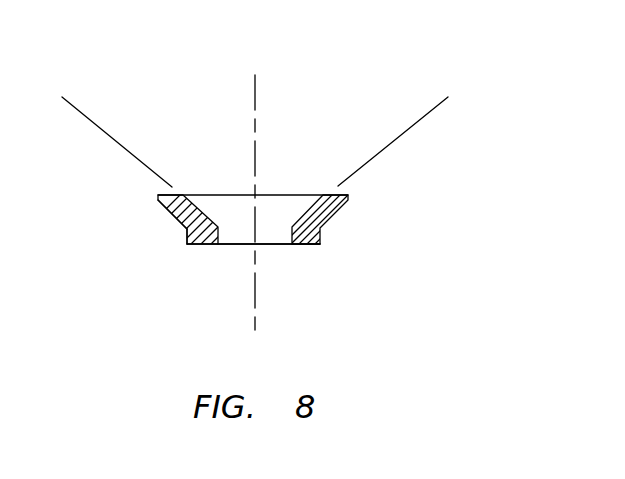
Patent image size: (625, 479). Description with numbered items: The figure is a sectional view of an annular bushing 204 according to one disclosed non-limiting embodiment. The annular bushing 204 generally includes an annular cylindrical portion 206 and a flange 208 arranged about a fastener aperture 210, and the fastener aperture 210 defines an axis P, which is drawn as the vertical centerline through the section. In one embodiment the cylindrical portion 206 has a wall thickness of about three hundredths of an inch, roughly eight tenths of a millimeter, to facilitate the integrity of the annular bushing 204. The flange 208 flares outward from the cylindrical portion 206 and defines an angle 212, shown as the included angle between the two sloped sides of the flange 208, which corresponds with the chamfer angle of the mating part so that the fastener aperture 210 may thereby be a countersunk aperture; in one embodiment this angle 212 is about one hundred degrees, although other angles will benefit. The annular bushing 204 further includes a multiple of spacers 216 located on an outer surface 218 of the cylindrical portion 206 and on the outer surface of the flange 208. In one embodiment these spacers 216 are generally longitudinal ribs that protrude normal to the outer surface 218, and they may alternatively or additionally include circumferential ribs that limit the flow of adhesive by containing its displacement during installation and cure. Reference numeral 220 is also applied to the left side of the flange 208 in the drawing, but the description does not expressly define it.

The annular bushing 204 is at (342, 182).
The annular cylindrical portion 206 is at (313, 246).
The flange 208 is at (342, 214).
The fastener aperture 210 is at (228, 246).
The angle 212 is at (434, 108).
The spacers 216 is at (178, 223).
The outer surface 218 is at (185, 245).
The upper chamfered edge 220 is at (164, 212).
The axis P is at (257, 108).